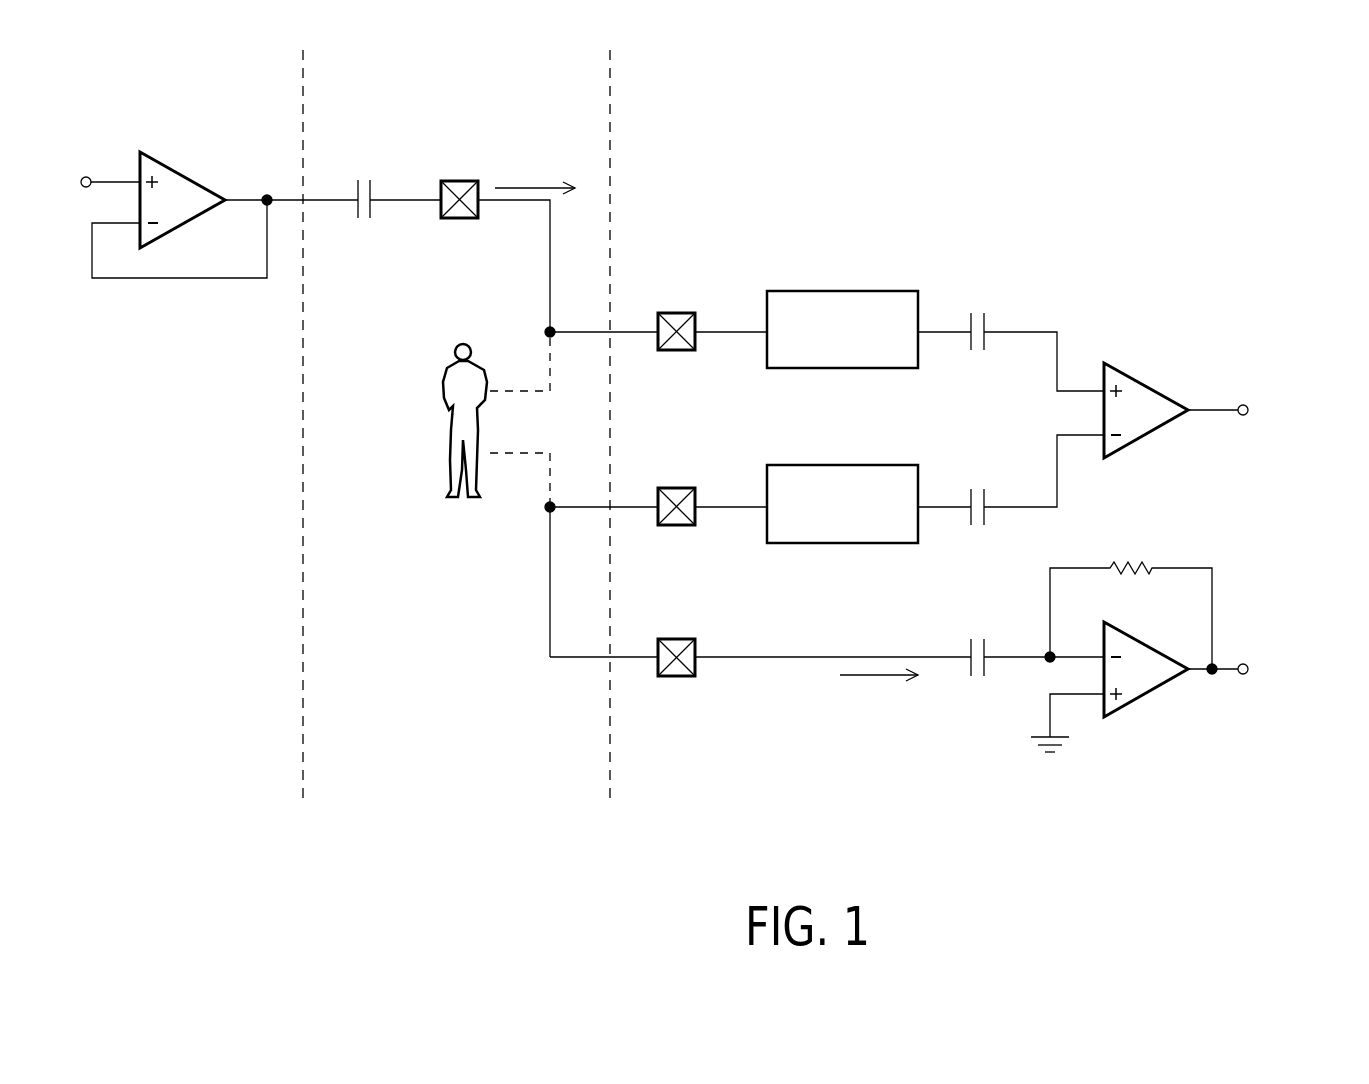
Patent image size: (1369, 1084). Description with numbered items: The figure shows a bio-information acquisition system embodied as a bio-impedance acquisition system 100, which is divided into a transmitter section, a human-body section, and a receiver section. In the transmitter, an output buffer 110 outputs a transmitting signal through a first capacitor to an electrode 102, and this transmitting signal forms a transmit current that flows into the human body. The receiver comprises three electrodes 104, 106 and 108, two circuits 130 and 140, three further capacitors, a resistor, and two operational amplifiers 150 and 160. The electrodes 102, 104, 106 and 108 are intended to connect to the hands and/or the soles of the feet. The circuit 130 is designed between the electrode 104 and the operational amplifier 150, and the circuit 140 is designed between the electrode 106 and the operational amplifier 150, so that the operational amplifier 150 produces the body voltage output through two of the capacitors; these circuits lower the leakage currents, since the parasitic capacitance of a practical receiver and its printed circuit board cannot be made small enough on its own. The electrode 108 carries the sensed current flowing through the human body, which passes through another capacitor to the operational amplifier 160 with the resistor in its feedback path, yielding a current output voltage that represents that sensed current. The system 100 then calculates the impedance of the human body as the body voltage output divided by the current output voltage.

The bio-impedance acquisition system 100 is at (1200, 178).
The electrode 102 is at (462, 181).
The electrode 104 is at (680, 313).
The electrode 106 is at (680, 488).
The electrode 108 is at (680, 639).
The output buffer 110 is at (185, 177).
The circuit 130 is at (840, 291).
The circuit 140 is at (840, 465).
The operational amplifier 150 is at (1145, 386).
The operational amplifier 160 is at (1140, 642).